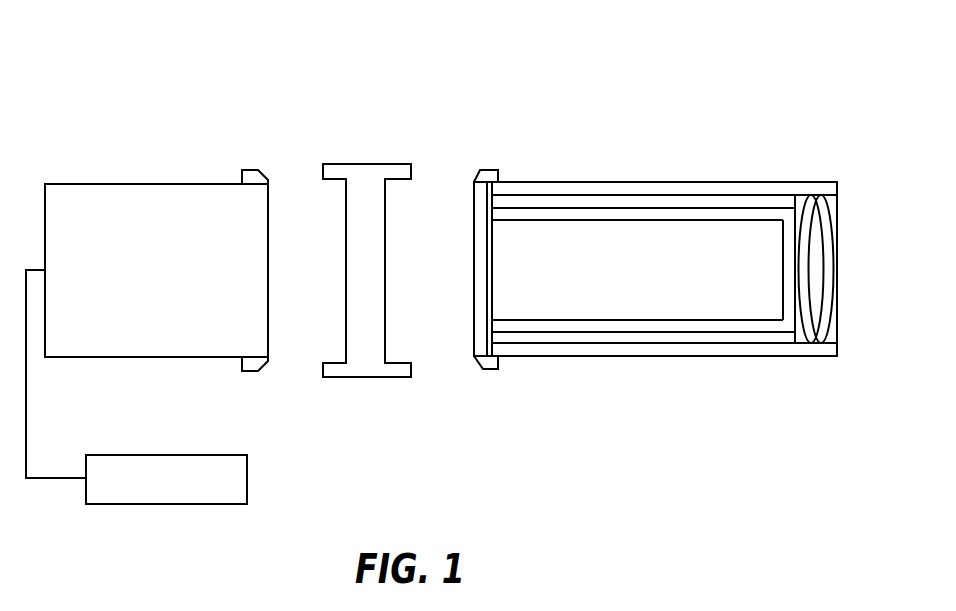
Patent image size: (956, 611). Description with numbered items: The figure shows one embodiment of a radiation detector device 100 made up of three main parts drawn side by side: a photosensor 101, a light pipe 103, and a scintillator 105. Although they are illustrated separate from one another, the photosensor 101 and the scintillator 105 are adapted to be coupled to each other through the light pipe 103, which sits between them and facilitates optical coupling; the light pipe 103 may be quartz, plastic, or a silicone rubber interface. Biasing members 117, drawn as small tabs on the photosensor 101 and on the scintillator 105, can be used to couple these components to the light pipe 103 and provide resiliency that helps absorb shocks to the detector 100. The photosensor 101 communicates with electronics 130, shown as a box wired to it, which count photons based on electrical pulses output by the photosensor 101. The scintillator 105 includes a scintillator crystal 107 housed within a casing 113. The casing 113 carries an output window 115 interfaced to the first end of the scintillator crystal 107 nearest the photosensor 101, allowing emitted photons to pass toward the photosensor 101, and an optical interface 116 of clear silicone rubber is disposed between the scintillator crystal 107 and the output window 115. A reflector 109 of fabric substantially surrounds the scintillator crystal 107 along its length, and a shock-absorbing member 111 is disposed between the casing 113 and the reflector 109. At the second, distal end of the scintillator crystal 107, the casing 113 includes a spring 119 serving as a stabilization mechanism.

The radiation detector device 100 is at (115, 94).
The photosensor 101 is at (147, 331).
The light pipe 103 is at (372, 377).
The scintillator 105 is at (696, 374).
The scintillator crystal 107 is at (697, 270).
The reflector 109 is at (703, 213).
The shock-absorbing member 111 is at (628, 201).
The casing 113 is at (566, 182).
The output window 115 is at (472, 232).
The optical interface 116 is at (492, 292).
The biasing members 117 is at (251, 171).
The spring 119 is at (816, 212).
The electronics 130 is at (135, 455).